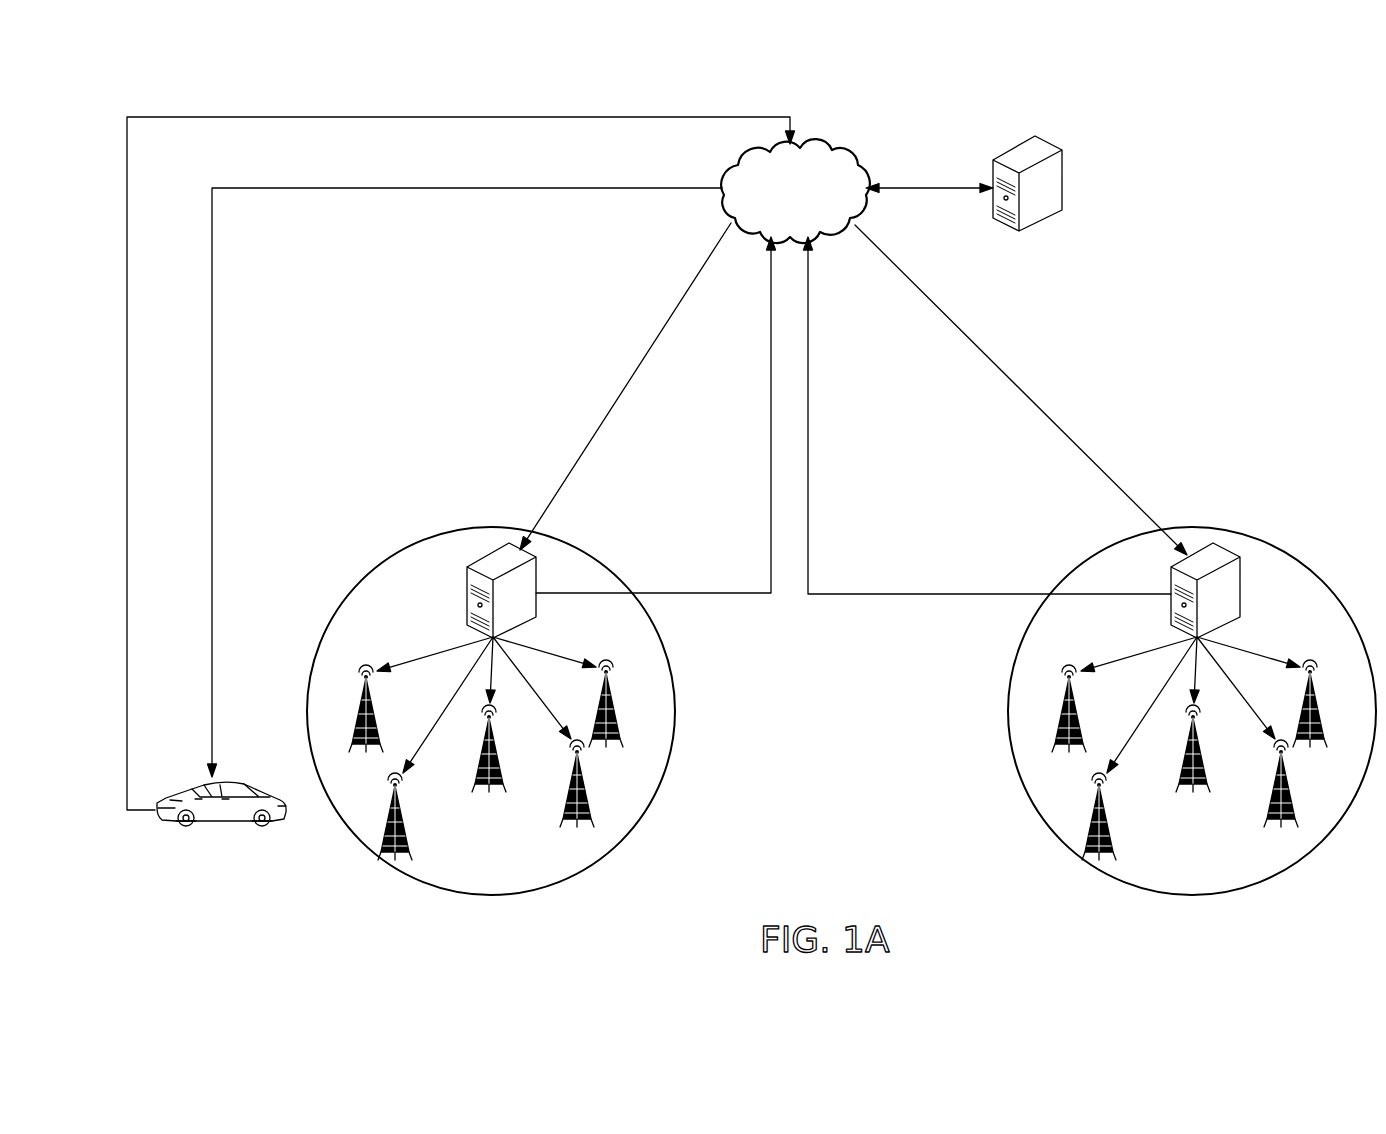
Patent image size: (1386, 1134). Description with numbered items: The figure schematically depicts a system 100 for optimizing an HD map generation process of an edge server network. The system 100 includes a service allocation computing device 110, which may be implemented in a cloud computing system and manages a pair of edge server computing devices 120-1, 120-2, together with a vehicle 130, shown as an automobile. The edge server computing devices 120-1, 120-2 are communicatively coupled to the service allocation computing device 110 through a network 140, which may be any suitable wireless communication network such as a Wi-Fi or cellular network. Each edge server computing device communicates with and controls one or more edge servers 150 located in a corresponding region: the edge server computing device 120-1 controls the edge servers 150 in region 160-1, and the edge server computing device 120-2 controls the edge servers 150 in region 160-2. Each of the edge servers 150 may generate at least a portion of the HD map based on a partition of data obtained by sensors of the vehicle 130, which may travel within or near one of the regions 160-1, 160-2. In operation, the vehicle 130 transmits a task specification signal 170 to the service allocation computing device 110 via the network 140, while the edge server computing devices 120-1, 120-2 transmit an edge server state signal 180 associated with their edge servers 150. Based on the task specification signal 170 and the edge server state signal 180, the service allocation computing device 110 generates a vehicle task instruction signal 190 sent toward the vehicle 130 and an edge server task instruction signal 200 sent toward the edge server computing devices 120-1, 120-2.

The system 100 is at (1257, 221).
The service allocation computing device 110 is at (1062, 185).
The edge server computing device 120-1 is at (467, 592).
The edge server computing device 120-2 is at (1240, 596).
The vehicle 130 is at (230, 826).
The network 140 is at (823, 150).
The edge servers 150 is at (1310, 760).
The region 160-1 is at (675, 712).
The region 160-2 is at (1008, 712).
The task specification signal 170 is at (128, 397).
The edge server state signal 180 is at (809, 460).
The vehicle task instruction signal 190 is at (213, 397).
The edge server task instruction signal 200 is at (1020, 385).